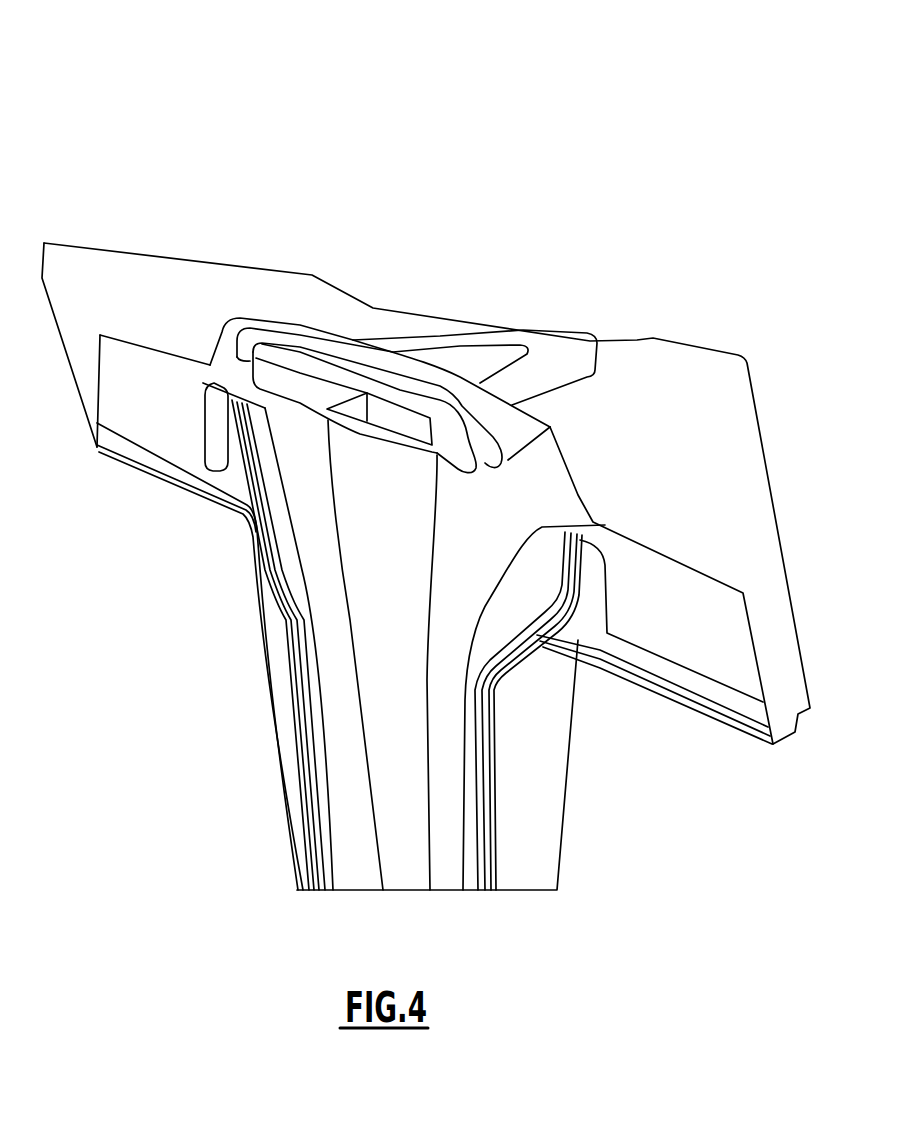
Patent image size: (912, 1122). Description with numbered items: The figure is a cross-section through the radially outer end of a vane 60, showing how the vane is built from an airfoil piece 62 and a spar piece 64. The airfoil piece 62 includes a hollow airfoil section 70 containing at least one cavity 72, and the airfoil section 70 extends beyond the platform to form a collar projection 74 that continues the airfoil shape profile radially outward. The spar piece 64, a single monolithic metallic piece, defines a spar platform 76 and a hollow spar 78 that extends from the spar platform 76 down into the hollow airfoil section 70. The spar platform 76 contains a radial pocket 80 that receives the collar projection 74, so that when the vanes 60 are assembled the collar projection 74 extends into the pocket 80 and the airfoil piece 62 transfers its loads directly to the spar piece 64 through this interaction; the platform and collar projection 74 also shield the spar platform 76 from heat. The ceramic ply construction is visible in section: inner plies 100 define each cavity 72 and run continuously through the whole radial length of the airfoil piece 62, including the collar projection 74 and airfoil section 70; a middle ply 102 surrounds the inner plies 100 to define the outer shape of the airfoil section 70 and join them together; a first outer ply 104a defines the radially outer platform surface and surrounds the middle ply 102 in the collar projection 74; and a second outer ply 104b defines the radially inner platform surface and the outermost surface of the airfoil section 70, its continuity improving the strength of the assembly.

The vane 60 is at (80, 63).
The airfoil piece 62 is at (632, 795).
The spar piece 64 is at (307, 452).
The airfoil section 70 is at (262, 713).
The cavity 72 is at (520, 592).
The collar projection 74 is at (247, 418).
The spar platform 76 is at (140, 347).
The spar 78 is at (337, 765).
The radial pocket 80 is at (228, 418).
The inner plies 100 is at (298, 625).
The middle ply 102 is at (253, 485).
The first outer ply 104a is at (206, 396).
The second outer ply 104b is at (265, 597).